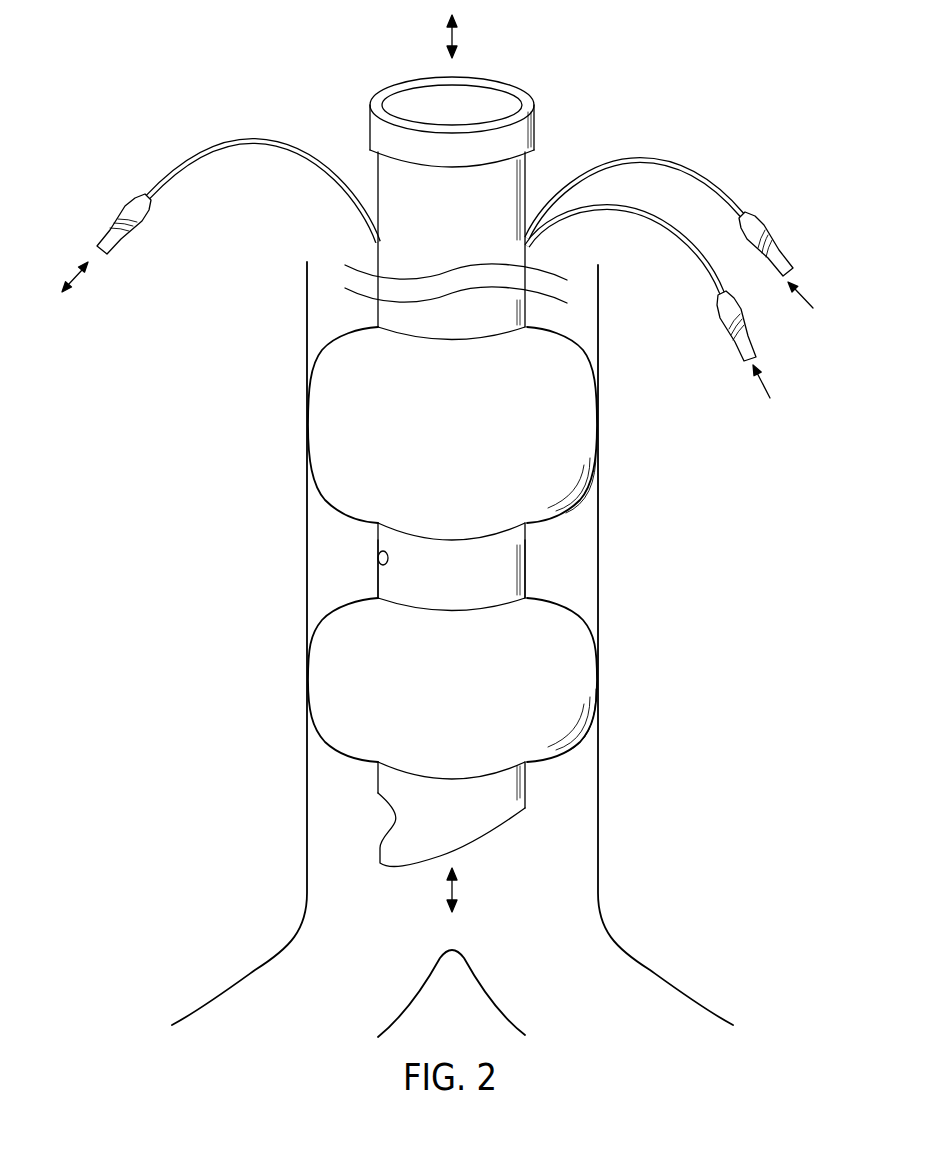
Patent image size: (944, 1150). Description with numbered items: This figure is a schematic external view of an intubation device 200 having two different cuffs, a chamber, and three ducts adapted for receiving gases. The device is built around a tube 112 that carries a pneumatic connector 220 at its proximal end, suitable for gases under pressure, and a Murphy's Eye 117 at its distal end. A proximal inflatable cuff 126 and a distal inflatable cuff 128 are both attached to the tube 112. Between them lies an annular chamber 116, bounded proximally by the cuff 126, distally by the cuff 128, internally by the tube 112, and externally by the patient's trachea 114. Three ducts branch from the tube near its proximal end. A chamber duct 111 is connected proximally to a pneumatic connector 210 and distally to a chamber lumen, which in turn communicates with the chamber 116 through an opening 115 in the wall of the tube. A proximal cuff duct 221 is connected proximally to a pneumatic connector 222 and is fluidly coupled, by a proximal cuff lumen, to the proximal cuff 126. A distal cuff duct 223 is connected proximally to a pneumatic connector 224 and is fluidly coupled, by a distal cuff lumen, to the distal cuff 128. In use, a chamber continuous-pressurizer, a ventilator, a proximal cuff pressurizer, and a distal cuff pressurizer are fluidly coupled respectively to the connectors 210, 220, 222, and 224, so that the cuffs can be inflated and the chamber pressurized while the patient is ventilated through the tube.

The intubation device 200 is at (115, 646).
The chamber duct 111 is at (195, 153).
The tube 112 is at (377, 180).
The patient's trachea 114 is at (307, 318).
The opening 115 is at (378, 567).
The annular chamber 116 is at (357, 556).
The Murphy's Eye 117 is at (390, 815).
The proximal inflatable cuff 126 is at (577, 500).
The distal inflatable cuff 128 is at (577, 740).
The pneumatic connector 210 is at (107, 217).
The pneumatic connector 220 is at (535, 127).
The proximal cuff duct 221 is at (698, 168).
The pneumatic connector 222 is at (763, 227).
The distal cuff duct 223 is at (695, 255).
The pneumatic connector 224 is at (720, 318).